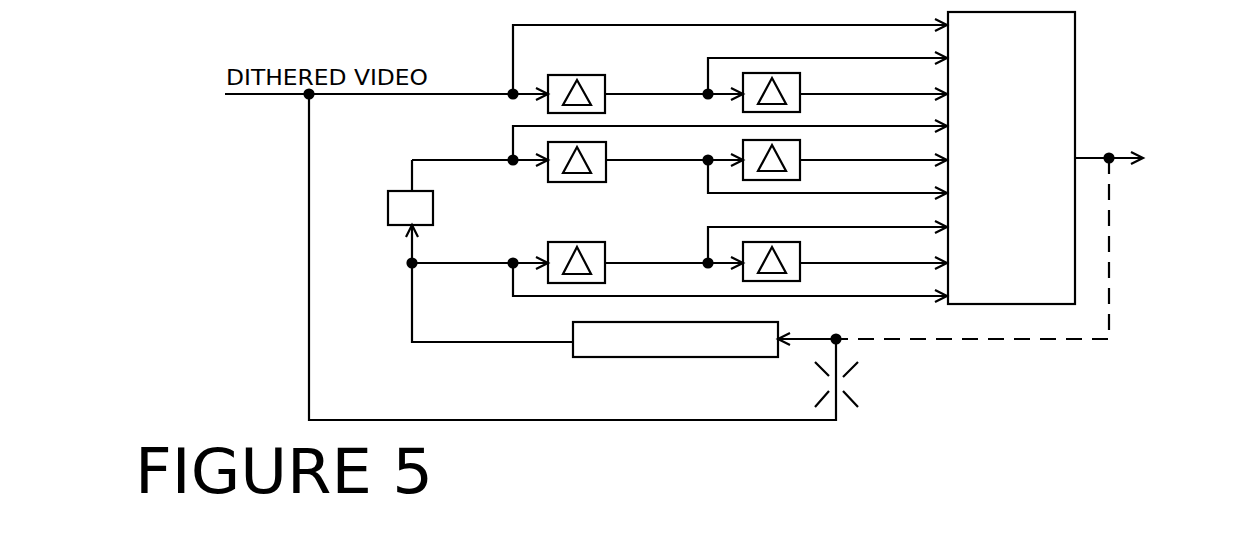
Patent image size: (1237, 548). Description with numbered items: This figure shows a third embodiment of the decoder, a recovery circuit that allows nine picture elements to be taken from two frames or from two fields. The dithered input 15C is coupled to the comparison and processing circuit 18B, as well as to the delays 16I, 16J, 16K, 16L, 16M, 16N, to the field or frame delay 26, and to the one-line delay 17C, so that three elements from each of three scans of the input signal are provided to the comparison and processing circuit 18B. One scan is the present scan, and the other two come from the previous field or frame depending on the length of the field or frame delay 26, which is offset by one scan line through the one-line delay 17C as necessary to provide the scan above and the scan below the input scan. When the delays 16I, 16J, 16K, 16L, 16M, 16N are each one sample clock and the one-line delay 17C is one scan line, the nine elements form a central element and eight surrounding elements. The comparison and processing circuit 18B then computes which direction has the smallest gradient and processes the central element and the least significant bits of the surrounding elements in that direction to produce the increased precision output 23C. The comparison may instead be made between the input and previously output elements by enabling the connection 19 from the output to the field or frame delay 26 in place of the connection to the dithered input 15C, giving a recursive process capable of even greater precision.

The dithered input 15C is at (470, 88).
The delay 16I is at (608, 73).
The delay 16J is at (803, 78).
The delay 16K is at (546, 180).
The delay 16L is at (803, 147).
The delay 16M is at (608, 243).
The delay 16N is at (803, 248).
The 1H delay 17C is at (392, 190).
The comparison and processing circuit 18B is at (1038, 51).
The increased precision output 23C is at (1135, 152).
The delay connection 19 is at (975, 343).
The field or frame delay 26 is at (572, 358).